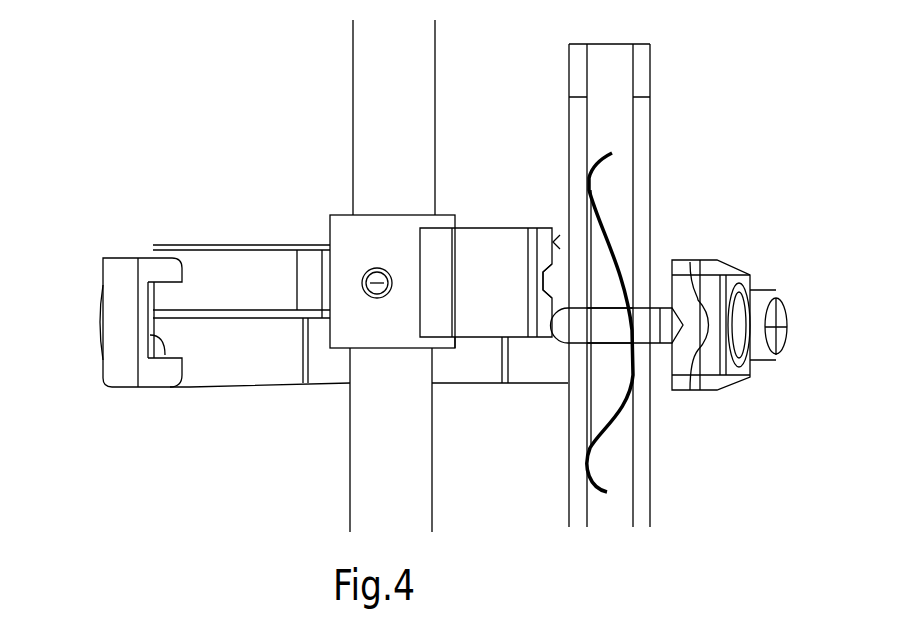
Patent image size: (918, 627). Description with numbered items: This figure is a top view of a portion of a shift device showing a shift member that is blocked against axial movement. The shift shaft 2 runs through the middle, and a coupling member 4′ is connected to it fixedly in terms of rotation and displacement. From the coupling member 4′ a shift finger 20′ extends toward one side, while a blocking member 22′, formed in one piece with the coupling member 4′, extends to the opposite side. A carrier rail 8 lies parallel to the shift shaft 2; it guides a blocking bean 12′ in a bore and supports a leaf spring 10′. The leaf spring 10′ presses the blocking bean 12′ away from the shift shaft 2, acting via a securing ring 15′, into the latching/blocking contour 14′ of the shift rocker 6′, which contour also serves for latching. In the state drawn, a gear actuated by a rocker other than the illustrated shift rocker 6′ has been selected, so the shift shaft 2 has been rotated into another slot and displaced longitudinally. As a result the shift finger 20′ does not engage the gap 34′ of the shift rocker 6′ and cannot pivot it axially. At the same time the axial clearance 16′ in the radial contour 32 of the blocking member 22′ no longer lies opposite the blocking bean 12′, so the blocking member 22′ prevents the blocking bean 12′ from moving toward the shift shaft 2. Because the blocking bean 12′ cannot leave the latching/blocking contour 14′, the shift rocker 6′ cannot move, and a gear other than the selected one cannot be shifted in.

The shift shaft 2 is at (388, 88).
The coupling member 4′ is at (395, 253).
The shift rocker 6′ is at (130, 248).
The carrier rail 8 is at (607, 103).
The leaf spring 10′ is at (610, 228).
The blocking bean 12′ is at (655, 322).
The latching/blocking contour 14′ is at (690, 390).
The securing ring 15′ is at (636, 372).
The axial clearance 16′ is at (545, 298).
The shift finger 20′ is at (225, 265).
The blocking member 22′ is at (470, 383).
The radial contour 32 is at (560, 236).
The gap 34′ is at (155, 360).